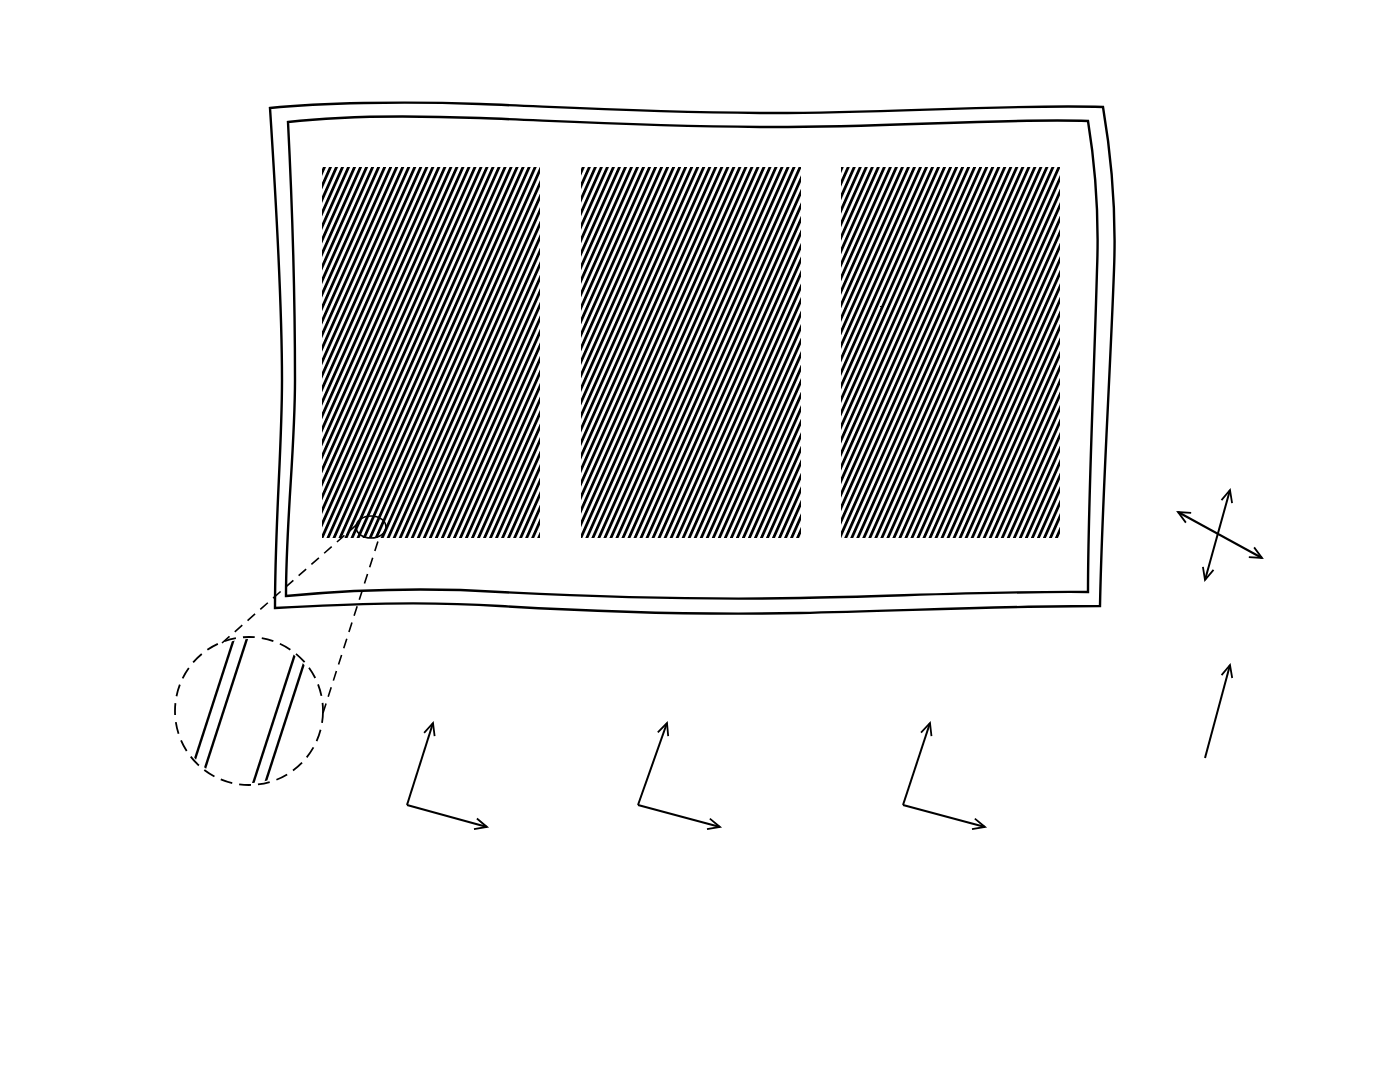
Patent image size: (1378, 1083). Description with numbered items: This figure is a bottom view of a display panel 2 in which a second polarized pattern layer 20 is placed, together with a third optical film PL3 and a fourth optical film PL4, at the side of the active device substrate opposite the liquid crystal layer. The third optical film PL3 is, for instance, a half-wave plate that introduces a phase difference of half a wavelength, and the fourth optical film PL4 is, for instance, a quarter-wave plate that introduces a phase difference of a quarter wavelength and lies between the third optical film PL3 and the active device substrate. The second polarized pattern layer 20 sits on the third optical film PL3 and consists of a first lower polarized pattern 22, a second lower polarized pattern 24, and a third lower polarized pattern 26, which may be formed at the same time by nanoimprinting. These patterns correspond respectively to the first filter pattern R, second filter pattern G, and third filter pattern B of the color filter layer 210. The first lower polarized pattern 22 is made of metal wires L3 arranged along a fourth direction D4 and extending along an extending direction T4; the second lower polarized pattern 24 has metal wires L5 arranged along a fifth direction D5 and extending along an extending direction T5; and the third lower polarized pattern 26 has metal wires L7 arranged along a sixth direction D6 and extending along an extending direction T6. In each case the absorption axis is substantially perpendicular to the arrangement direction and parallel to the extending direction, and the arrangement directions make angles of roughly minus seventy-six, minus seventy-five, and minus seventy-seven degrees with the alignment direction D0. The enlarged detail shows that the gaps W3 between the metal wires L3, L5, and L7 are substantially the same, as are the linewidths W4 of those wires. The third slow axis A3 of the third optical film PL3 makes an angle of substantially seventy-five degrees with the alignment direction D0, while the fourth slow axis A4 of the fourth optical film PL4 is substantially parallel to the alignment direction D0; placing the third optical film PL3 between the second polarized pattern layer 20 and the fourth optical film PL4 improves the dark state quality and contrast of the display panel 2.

The display panel 2 is at (1371, 609).
The second polarized pattern layer 20 is at (1307, 78).
The first lower polarized pattern 22 is at (357, 225).
The second lower polarized pattern 24 is at (655, 165).
The third lower polarized pattern 26 is at (962, 165).
The color filter layer 210 is at (1307, 228).
The first filter pattern R is at (400, 165).
The second filter pattern G is at (590, 165).
The third filter pattern B is at (903, 165).
The metal wires L3 is at (500, 165).
The metal wires L5 is at (780, 165).
The metal wires L7 is at (1018, 165).
The third optical film PL3 is at (300, 352).
The fourth optical film PL4 is at (285, 292).
The gaps W3 is at (263, 753).
The linewidths W4 is at (237, 724).
The extending direction T4 is at (427, 746).
The extending direction T5 is at (657, 746).
The extending direction T6 is at (922, 746).
The fourth direction D4 is at (458, 837).
The fifth direction D5 is at (699, 826).
The sixth direction D6 is at (952, 837).
The third slow axis A3 is at (1199, 524).
The fourth slow axis A4 is at (1229, 515).
The alignment direction D0 is at (1227, 691).